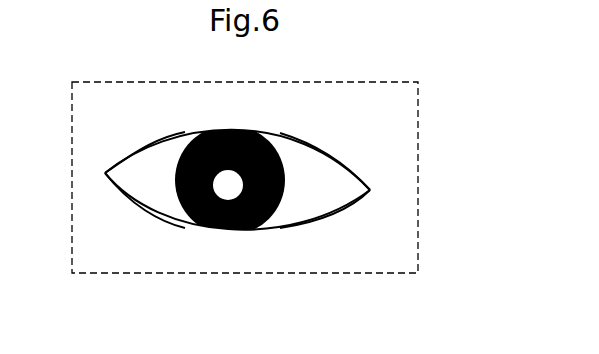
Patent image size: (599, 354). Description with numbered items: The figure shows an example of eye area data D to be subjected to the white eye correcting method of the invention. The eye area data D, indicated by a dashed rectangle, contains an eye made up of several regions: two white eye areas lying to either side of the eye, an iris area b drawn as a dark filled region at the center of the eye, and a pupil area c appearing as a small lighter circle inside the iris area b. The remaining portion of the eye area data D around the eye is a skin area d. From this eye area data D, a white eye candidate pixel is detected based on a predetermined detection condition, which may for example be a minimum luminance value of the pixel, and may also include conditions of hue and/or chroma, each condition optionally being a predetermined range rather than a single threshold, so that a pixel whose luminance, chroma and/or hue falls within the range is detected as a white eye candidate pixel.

The eye area data D is at (353, 82).
The skin area d is at (260, 107).
The iris area b is at (233, 231).
The pupil area c is at (228, 182).